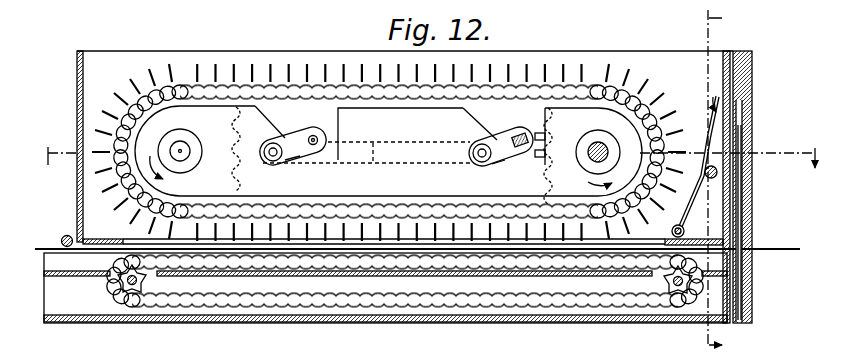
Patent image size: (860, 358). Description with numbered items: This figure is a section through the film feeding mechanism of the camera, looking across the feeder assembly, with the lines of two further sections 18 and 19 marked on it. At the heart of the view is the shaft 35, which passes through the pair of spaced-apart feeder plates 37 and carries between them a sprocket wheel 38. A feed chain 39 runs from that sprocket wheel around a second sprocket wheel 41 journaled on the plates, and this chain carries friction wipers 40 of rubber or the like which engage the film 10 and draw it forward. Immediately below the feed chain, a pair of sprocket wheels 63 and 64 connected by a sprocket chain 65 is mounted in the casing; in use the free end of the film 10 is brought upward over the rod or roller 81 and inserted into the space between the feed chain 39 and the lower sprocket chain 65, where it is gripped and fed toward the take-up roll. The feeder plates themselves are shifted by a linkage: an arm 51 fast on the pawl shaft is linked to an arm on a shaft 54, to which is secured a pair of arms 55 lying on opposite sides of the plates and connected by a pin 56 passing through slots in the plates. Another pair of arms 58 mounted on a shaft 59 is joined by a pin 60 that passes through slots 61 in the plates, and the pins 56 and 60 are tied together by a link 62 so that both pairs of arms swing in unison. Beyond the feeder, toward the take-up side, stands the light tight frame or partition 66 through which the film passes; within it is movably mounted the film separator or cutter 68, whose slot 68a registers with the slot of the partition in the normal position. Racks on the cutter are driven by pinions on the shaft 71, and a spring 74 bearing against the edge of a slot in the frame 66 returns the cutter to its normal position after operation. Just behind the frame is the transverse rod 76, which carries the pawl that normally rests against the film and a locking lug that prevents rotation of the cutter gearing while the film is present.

The film 10 is at (40, 249).
The section line 18— 18 is at (438, 147).
The section line 19— 19 is at (688, 178).
The shaft 35 is at (614, 148).
The feeder plates 37 is at (486, 130).
The sprocket wheel 38 is at (605, 105).
The feed chain 39 is at (336, 205).
The friction wiper 40 is at (140, 86).
The sprocket wheel 41 is at (207, 117).
The arm 51 is at (499, 131).
The shaft 54 is at (521, 128).
The arms 55 is at (498, 161).
The pin 56 is at (472, 149).
The arms 58 is at (294, 147).
The shaft 59 is at (313, 134).
The pin 60 is at (265, 149).
The slots 61 is at (268, 132).
The link 62 is at (366, 135).
The sprocket wheel 63 is at (112, 293).
The sprocket wheel 64 is at (700, 297).
The sprocket chain 65 is at (492, 302).
The light tight frame or partition 66 is at (752, 55).
The film separator or cutter 68 is at (750, 100).
The slot 68a is at (747, 253).
The shaft 71 is at (706, 186).
The spring 74 is at (751, 165).
The transverse rod 76 is at (685, 231).
The rod or roller 81 is at (66, 235).